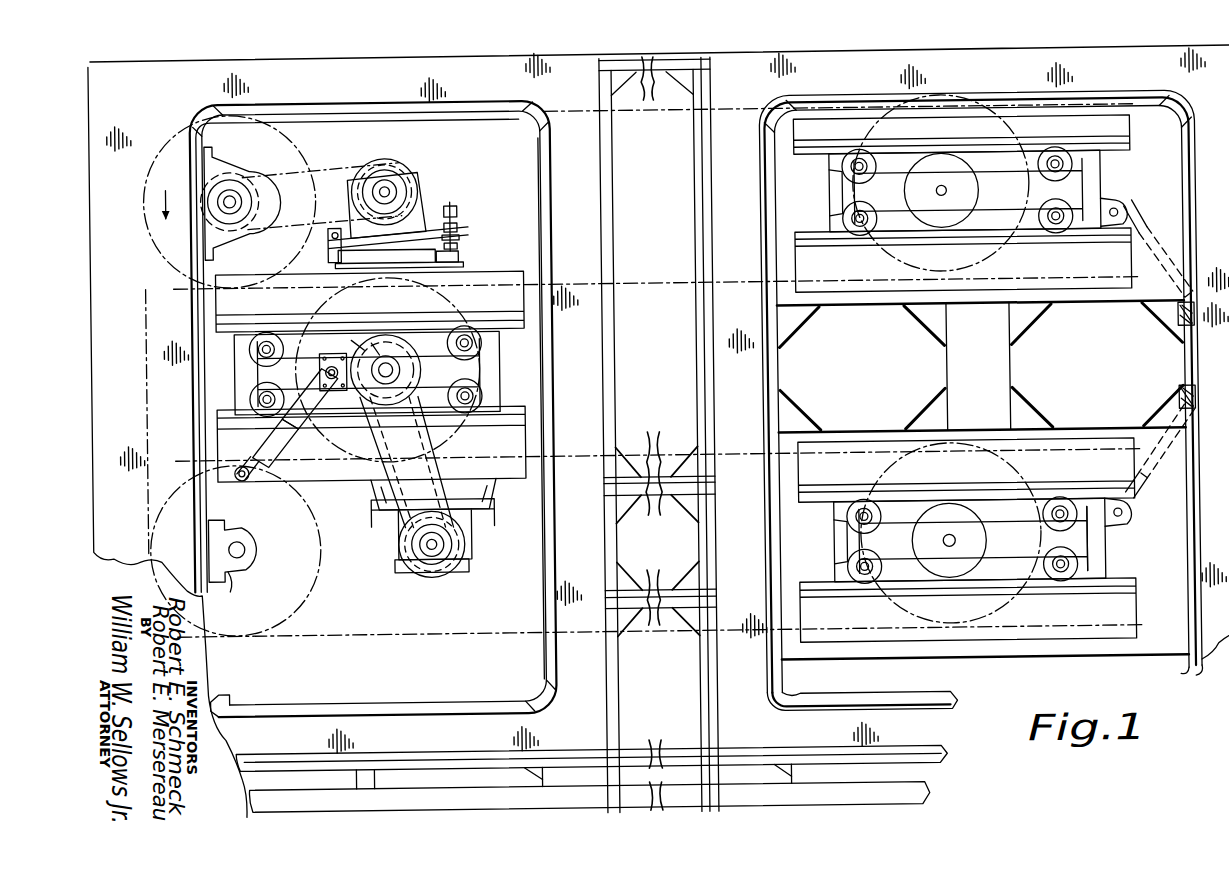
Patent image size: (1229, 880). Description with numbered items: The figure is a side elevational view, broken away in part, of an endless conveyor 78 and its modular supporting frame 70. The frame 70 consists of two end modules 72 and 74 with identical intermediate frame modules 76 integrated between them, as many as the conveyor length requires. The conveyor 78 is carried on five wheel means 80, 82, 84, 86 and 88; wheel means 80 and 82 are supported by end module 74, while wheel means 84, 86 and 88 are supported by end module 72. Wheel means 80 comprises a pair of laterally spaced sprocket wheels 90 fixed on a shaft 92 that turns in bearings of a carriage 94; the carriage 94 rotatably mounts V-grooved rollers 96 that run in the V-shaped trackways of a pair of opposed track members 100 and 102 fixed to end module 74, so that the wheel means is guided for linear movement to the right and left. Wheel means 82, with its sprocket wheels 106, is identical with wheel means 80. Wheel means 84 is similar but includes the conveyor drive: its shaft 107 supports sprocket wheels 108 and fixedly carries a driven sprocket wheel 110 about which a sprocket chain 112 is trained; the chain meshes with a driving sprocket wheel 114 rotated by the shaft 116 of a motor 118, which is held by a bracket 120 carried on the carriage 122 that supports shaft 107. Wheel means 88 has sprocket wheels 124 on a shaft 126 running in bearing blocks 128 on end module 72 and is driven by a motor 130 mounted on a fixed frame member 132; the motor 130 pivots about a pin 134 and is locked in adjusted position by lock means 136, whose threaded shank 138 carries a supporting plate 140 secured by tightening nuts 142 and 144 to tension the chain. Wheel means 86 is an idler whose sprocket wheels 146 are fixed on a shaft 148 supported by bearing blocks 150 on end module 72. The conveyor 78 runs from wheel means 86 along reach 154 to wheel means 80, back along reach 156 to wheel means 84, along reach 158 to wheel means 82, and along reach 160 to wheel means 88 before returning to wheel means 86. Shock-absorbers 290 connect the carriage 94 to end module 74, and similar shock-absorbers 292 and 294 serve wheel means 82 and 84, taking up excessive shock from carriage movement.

The supporting frame 70 is at (752, 224).
The end module 72 is at (376, 98).
The end module 74 is at (978, 101).
The intermediate frame module 76 is at (667, 433).
The endless conveyor 78 is at (432, 634).
The wheel means 80 is at (832, 538).
The wheel means 82 is at (831, 197).
The wheel means 84 is at (500, 366).
The wheel means 86 is at (310, 603).
The wheel means 88 is at (312, 152).
The sprocket wheels 90 is at (1000, 479).
The shaft 92 is at (941, 538).
The carriage 94 is at (1100, 561).
The V-grooved rollers 96 is at (860, 503).
The track member 100 is at (1097, 632).
The track member 102 is at (1096, 445).
The sprocket wheels 106 is at (440, 320).
The shaft 107 is at (380, 344).
The sprocket wheels 108 is at (344, 437).
The driven sprocket wheel 110 is at (395, 348).
The sprocket chain 112 is at (380, 455).
The driving sprocket wheel 114 is at (460, 557).
The shaft 116 is at (420, 562).
The motor 118 is at (466, 535).
The bracket 120 is at (496, 484).
The carriage 122 is at (494, 398).
The sprocket wheels 124 is at (165, 150).
The shaft 126 is at (236, 192).
The bearing blocks 128 is at (226, 248).
The motor 130 is at (400, 172).
The fixed frame member 132 is at (496, 274).
The pin 134 is at (326, 237).
The lock means 136 is at (462, 227).
The threaded shank 138 is at (461, 212).
The supporting plate 140 is at (464, 237).
The nut 142 is at (461, 255).
The nut 144 is at (452, 204).
The sprocket wheels 146 is at (318, 566).
The shaft 148 is at (244, 545).
The bearing blocks 150 is at (230, 580).
The conveyor reach 154 is at (735, 629).
The conveyor reach 156 is at (735, 442).
The conveyor reach 158 is at (733, 283).
The conveyor reach 160 is at (748, 112).
The shock-absorbers 290 is at (1127, 504).
The shock-absorbers 292 is at (1119, 218).
The shock-absorbers 294 is at (298, 436).